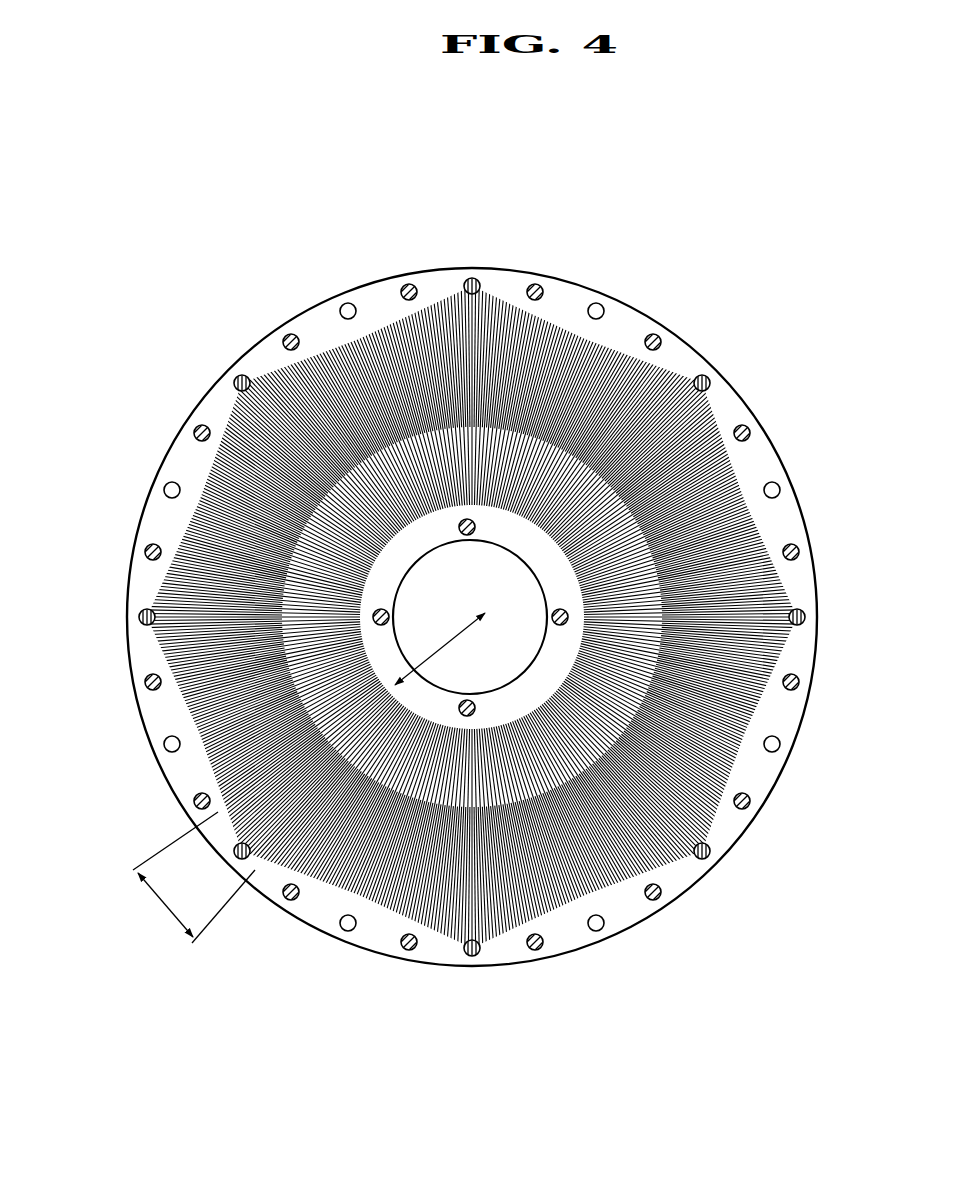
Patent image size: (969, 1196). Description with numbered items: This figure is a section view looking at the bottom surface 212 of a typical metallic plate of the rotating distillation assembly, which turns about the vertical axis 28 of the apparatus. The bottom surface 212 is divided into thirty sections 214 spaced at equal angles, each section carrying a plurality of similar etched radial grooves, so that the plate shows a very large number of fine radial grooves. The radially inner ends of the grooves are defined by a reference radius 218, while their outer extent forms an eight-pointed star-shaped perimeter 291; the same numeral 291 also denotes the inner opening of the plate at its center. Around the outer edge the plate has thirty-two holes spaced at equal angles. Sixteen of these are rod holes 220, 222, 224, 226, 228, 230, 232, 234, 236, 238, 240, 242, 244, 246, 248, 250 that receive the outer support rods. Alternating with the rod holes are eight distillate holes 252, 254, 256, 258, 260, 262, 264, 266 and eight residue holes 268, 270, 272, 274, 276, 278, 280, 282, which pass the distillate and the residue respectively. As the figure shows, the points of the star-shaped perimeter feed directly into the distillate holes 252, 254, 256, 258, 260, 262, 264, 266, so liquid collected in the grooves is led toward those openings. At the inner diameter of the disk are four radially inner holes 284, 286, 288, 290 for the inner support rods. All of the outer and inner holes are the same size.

The vertical axis 28 is at (483, 616).
The bottom surface 212 is at (368, 920).
The sections 214 is at (155, 903).
The reference radius 218 is at (440, 645).
The rod hole 220 is at (405, 959).
The rod hole 222 is at (281, 907).
The rod hole 224 is at (185, 810).
The rod hole 226 is at (134, 684).
The rod hole 228 is at (134, 548).
The rod hole 230 is at (185, 422).
The rod hole 232 is at (281, 325).
The rod hole 234 is at (418, 245).
The rod hole 236 is at (541, 275).
The rod hole 238 is at (665, 325).
The rod hole 240 is at (761, 422).
The rod hole 242 is at (812, 548).
The rod hole 244 is at (812, 684).
The rod hole 246 is at (761, 810).
The rod hole 248 is at (666, 907).
The rod hole 250 is at (540, 959).
The distillate hole 252 is at (473, 966).
The distillate hole 254 is at (229, 864).
The distillate hole 256 is at (127, 616).
The distillate hole 258 is at (228, 369).
The distillate hole 260 is at (474, 268).
The distillate hole 262 is at (718, 369).
The distillate hole 264 is at (818, 615).
The distillate hole 266 is at (718, 864).
The residue hole 268 is at (341, 939).
The residue hole 270 is at (153, 750).
The residue hole 272 is at (153, 482).
The residue hole 274 is at (341, 293).
The residue hole 276 is at (605, 293).
The residue hole 278 is at (793, 482).
The residue hole 280 is at (793, 750).
The residue hole 282 is at (605, 939).
The radially inner hole 284 is at (476, 708).
The radially inner hole 286 is at (388, 613).
The radially inner hole 288 is at (462, 533).
The radially inner hole 290 is at (552, 621).
The inner opening 291 is at (736, 780).